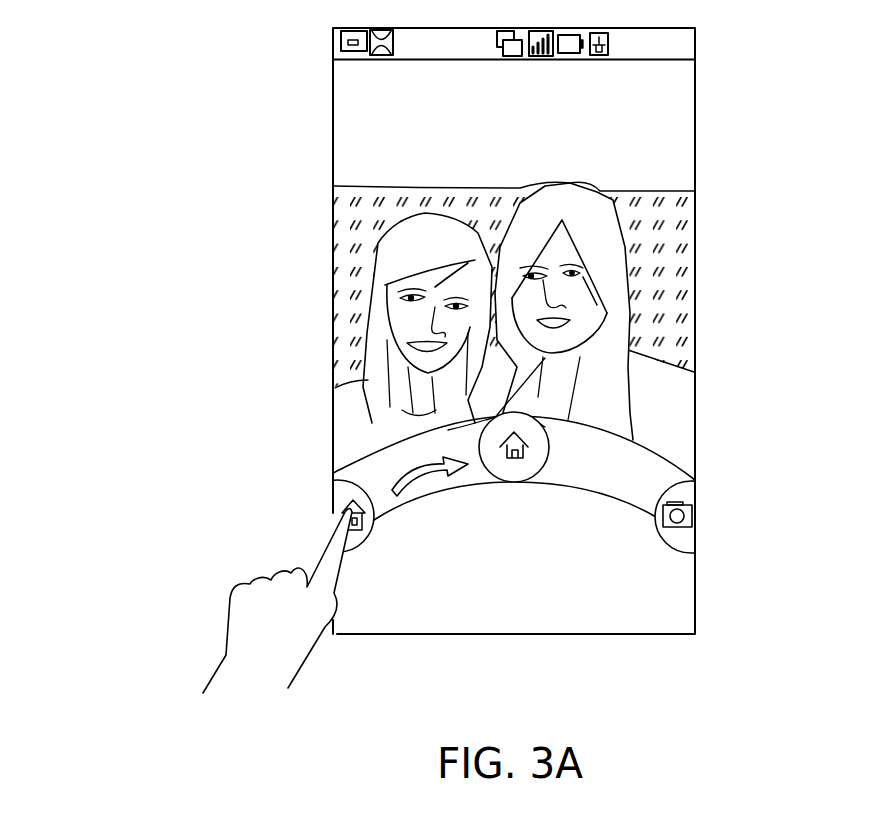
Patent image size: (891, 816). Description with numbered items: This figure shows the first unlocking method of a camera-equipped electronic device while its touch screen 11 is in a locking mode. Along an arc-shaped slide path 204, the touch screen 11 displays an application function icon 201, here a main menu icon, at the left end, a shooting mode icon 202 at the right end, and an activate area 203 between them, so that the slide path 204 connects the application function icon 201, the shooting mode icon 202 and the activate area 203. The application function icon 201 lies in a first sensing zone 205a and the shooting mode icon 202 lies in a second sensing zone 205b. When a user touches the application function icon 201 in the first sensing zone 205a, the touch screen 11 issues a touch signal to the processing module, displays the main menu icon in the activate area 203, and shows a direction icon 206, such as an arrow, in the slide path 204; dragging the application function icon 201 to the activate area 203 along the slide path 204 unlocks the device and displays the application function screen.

The touch screen 11 is at (677, 115).
The application function icon 201 is at (343, 503).
The shooting mode icon 202 is at (677, 515).
The activate area 203 is at (540, 437).
The slide path 204 is at (640, 470).
The first sensing zone 205a is at (340, 483).
The second sensing zone 205b is at (683, 542).
The direction icon 206 is at (400, 458).